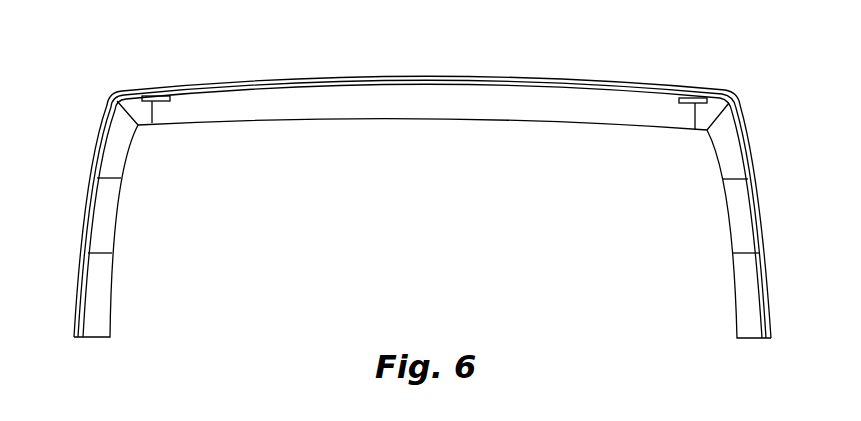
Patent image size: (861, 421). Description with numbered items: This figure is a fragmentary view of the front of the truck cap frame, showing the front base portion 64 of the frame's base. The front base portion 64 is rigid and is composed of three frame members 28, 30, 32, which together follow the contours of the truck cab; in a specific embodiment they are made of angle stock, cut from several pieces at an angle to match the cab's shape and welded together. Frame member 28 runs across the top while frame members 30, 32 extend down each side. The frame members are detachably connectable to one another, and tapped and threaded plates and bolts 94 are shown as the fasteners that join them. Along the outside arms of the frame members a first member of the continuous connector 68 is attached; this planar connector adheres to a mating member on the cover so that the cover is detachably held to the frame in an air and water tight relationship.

The front base portion 64 is at (517, 61).
The first member of the continuous connector 68 is at (368, 78).
The tapped and threaded plates and bolts 94 is at (161, 87).
The frame member 28 is at (336, 104).
The frame member 30 is at (109, 211).
The frame member 32 is at (722, 154).